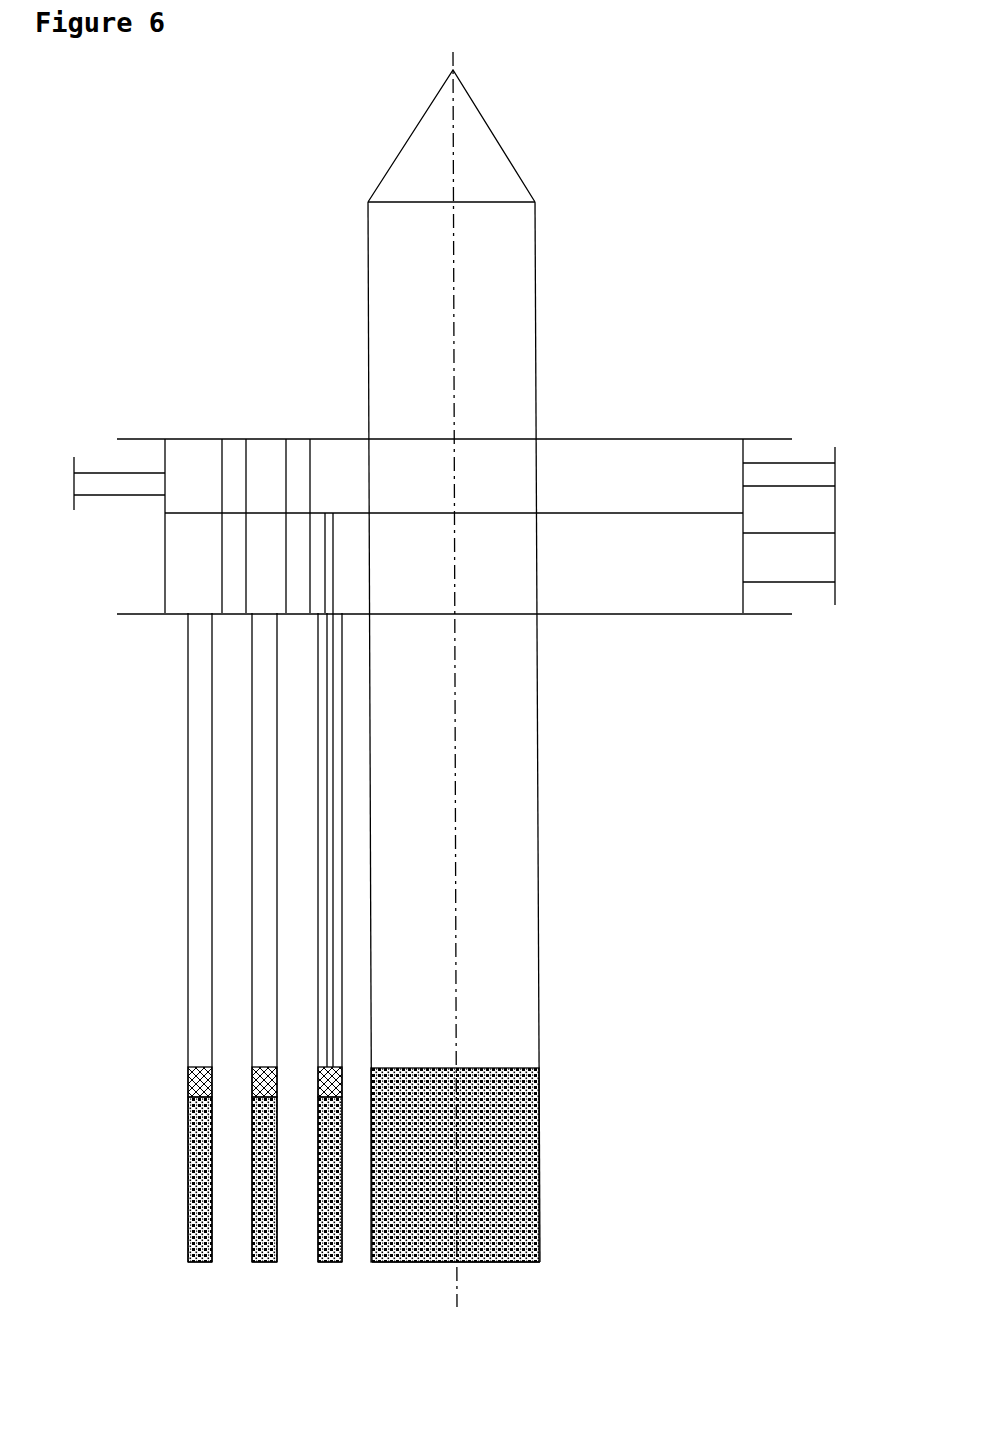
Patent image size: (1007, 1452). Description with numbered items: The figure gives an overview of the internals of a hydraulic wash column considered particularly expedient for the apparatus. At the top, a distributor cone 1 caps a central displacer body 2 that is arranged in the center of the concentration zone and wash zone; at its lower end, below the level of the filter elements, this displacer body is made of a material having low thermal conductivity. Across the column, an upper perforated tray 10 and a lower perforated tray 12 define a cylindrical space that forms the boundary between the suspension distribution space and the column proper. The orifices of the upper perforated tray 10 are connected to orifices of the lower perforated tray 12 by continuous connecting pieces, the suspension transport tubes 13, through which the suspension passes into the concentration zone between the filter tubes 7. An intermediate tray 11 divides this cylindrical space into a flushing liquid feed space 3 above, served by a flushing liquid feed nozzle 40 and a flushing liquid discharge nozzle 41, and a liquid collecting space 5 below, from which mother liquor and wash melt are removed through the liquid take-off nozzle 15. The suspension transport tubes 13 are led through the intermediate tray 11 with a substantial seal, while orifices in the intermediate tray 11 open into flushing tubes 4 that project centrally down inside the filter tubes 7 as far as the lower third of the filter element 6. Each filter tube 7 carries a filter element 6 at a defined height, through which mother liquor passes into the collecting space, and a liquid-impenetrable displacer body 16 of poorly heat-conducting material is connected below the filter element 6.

The distributor cone 1 is at (473, 153).
The central displacer body 2 is at (520, 857).
The flushing liquid feed space 3 is at (576, 481).
The flushing tube 4 is at (332, 940).
The liquid collecting space 5 is at (600, 557).
The filter element 6 is at (190, 1090).
The filter tube 7 is at (197, 790).
The upper perforated tray 10 is at (631, 440).
The intermediate tray 11 is at (673, 513).
The lower perforated tray 12 is at (690, 615).
The suspension transport tube 13 is at (237, 476).
The liquid take-off nozzle 15 is at (816, 560).
The displacer body 16 is at (405, 1183).
The flushing liquid feed nozzle 40 is at (115, 487).
The flushing liquid discharge nozzle 41 is at (805, 475).